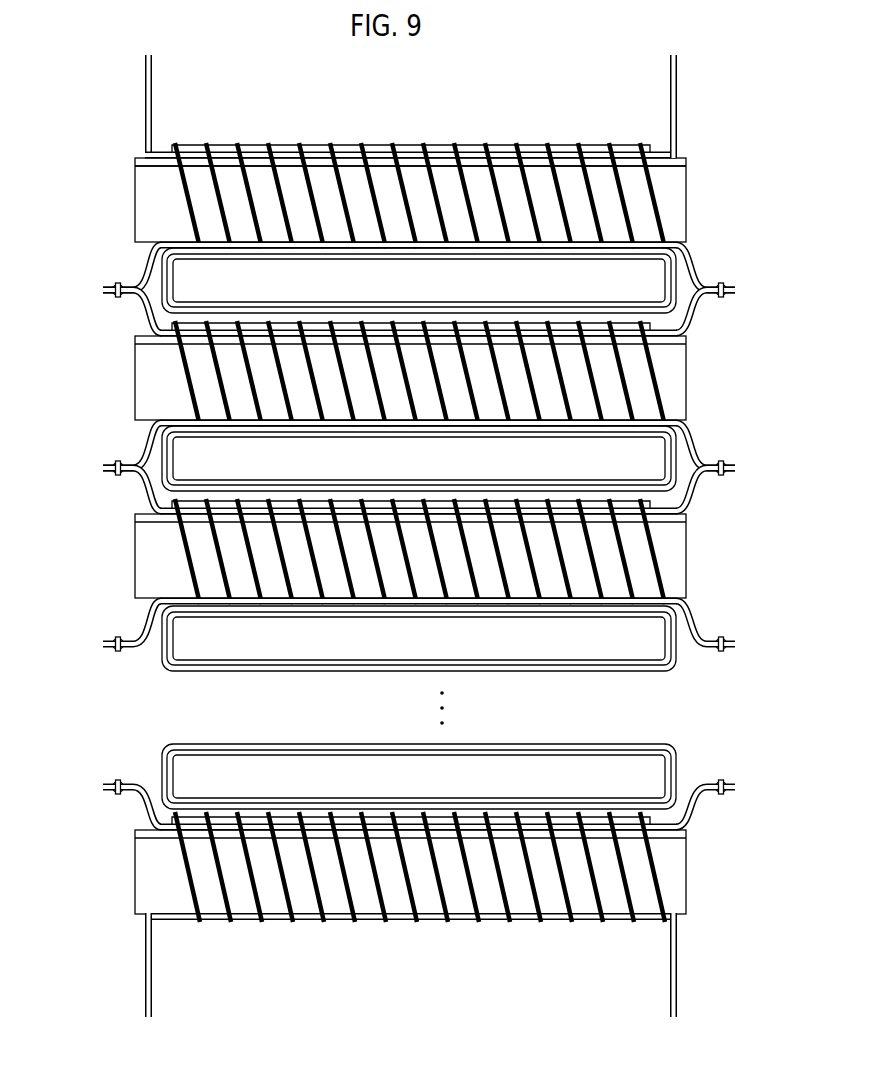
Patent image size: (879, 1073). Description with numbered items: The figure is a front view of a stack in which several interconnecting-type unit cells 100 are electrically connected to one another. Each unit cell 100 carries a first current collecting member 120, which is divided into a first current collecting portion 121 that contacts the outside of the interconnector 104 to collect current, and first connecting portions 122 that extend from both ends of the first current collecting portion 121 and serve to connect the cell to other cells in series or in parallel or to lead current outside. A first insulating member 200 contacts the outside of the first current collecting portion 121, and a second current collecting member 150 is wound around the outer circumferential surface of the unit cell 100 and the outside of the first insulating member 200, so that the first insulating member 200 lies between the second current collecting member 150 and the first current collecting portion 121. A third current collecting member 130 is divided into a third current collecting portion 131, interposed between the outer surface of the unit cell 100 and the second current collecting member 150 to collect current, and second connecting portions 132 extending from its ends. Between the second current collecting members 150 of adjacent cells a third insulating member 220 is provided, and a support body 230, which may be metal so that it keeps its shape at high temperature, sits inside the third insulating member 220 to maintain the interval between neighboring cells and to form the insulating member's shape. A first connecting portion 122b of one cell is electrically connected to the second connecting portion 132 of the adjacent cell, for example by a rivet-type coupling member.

The unit cell 100 is at (133, 206).
The interconnector 104 is at (137, 165).
The first current collecting member 120 is at (223, 76).
The first current collecting portion 121 is at (161, 150).
The first connecting portion 122 is at (151, 92).
The first connecting portion 122b is at (683, 326).
The third current collecting member 130 is at (463, 256).
The third current collecting portion 131 is at (647, 244).
The second connecting portion 132 is at (717, 258).
The second current collecting member 150 is at (456, 180).
The first insulating member 200 is at (377, 147).
The third insulating member 220 is at (166, 282).
The support body 230 is at (156, 253).